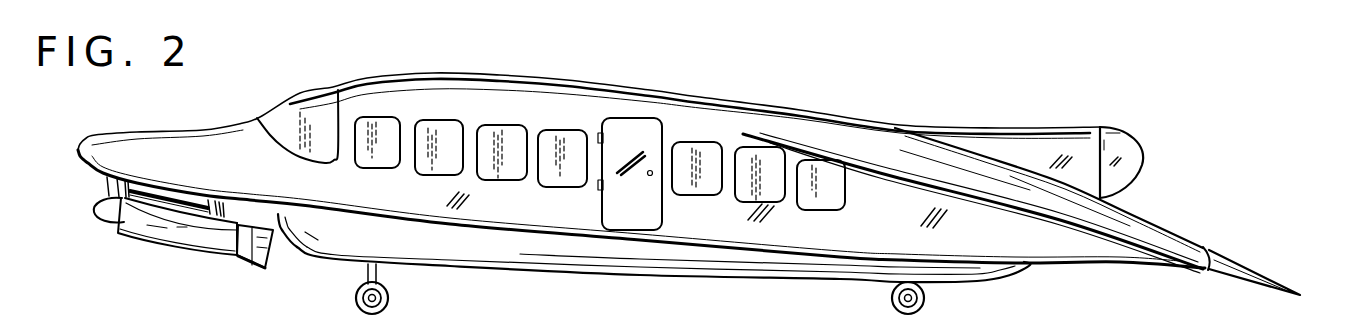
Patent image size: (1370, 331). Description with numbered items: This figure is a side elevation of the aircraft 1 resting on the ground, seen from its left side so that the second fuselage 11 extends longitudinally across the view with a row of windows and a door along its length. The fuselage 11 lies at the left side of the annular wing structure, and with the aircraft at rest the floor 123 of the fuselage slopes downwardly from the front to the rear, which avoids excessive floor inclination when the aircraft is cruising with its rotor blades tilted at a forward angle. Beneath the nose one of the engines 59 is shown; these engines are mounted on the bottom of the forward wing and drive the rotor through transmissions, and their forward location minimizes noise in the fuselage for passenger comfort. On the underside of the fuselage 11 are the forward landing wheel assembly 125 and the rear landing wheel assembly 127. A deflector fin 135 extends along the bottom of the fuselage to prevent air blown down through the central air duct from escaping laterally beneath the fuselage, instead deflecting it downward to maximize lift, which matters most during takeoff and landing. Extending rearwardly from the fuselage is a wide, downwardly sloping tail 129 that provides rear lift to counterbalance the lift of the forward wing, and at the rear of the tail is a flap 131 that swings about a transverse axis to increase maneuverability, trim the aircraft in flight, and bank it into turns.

The aircraft 1 is at (826, 72).
The second fuselage 11 is at (563, 87).
The engines 59 is at (183, 257).
The floor 123 is at (413, 213).
The forward landing wheel assembly 125 is at (390, 303).
The rear landing wheel assembly 127 is at (925, 300).
The tail 129 is at (1130, 223).
The flap 131 is at (1247, 270).
The deflector fin 135 is at (732, 258).